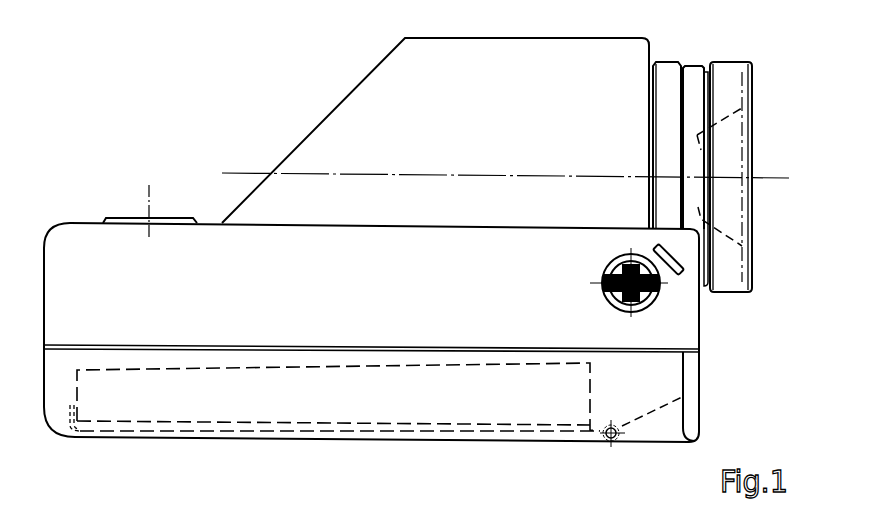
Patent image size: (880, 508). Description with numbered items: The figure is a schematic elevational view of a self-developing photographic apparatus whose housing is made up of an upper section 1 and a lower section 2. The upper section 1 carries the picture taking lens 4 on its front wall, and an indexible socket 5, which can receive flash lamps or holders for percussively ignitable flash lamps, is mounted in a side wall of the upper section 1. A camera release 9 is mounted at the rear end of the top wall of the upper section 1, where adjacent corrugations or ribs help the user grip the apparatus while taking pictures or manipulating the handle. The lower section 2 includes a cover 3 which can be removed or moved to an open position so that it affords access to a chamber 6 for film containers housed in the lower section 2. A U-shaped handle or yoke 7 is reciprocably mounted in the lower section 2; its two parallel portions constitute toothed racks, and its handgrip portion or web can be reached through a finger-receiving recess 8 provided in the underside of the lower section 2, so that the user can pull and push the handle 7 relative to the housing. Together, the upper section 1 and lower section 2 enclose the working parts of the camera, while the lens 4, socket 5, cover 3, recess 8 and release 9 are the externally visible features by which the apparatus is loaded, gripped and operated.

The upper section 1 is at (444, 57).
The lower section 2 is at (59, 400).
The cover 3 is at (166, 437).
The picture taking lens 4 is at (726, 70).
The indexible socket 5 is at (641, 293).
The chamber 6 is at (318, 401).
The U-shaped handle 7 is at (688, 418).
The finger-receiving recess 8 is at (652, 420).
The camera release 9 is at (133, 218).